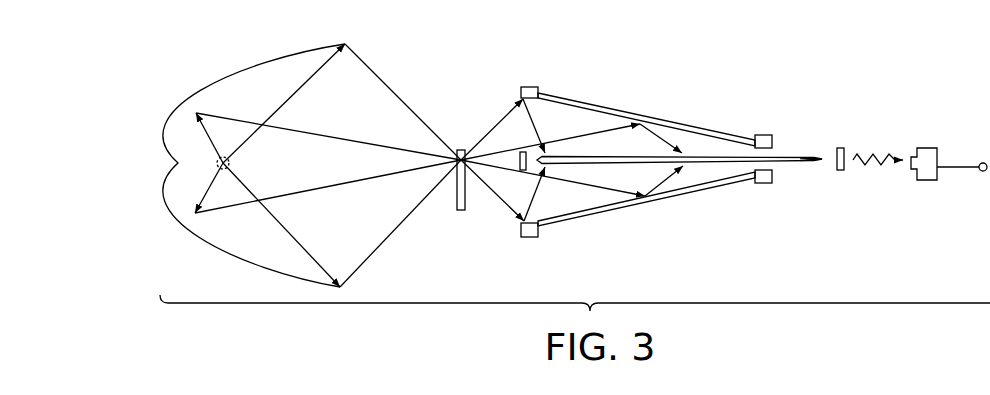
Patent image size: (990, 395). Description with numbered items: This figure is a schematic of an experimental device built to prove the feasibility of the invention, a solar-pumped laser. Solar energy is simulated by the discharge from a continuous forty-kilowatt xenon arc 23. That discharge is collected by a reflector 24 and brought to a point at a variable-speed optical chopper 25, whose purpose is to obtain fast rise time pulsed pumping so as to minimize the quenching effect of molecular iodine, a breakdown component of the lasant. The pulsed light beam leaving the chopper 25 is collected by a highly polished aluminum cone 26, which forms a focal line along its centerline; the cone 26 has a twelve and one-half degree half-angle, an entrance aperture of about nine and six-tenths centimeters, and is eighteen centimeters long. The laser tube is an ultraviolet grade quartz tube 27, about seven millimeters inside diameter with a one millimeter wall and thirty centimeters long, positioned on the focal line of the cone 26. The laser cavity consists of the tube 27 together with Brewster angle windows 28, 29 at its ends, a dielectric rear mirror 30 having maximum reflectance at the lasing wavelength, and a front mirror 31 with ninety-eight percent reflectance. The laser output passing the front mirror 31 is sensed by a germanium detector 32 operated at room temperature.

The xenon arc 23 is at (233, 163).
The reflector 24 is at (179, 158).
The variable-speed optical chopper 25 is at (456, 203).
The highly polished aluminum cone 26 is at (650, 200).
The ultraviolet grade quartz tube 27 is at (785, 155).
The Brewster angle window 28 is at (519, 101).
The Brewster angle window 29 is at (822, 155).
The dielectric rear mirror 30 is at (518, 166).
The front mirror 31 is at (844, 172).
The germanium detector 32 is at (930, 148).